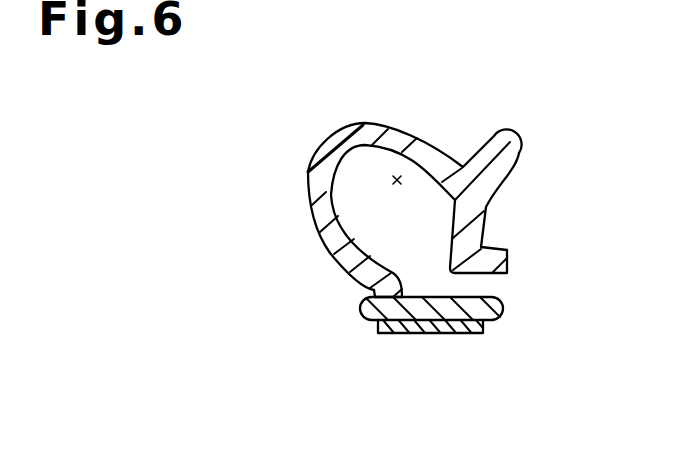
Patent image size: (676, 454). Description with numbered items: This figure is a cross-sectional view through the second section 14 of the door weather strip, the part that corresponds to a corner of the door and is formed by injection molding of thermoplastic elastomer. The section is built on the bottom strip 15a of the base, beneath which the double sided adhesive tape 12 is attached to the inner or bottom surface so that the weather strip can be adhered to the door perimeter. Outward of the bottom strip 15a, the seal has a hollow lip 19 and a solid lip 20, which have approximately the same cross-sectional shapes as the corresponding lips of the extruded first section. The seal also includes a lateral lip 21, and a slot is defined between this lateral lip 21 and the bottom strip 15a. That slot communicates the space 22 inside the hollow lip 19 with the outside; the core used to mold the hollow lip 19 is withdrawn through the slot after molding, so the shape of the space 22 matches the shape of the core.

The double sided adhesive tape 12 is at (427, 334).
The second section 14 is at (305, 193).
The bottom strip 15a is at (362, 309).
The hollow lip 19 is at (367, 125).
The solid lip 20 is at (506, 140).
The lateral lip 21 is at (497, 248).
The space 22 is at (399, 181).